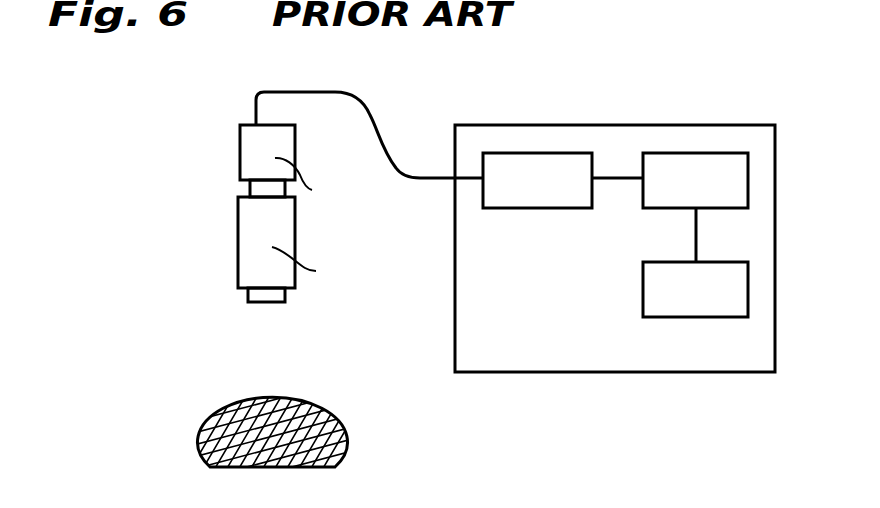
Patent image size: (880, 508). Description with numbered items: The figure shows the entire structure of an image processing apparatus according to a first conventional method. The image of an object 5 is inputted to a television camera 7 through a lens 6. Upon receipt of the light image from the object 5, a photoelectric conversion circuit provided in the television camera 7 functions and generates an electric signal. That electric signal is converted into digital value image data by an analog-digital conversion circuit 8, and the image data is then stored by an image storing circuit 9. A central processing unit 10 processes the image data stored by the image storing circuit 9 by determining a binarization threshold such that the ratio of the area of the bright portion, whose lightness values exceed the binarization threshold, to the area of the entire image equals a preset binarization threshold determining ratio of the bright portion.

The object 5 is at (317, 407).
The lens 6 is at (240, 247).
The television camera 7 is at (240, 156).
The analog-digital conversion circuit 8 is at (512, 208).
The image storing circuit 9 is at (653, 208).
The central processing unit 10 is at (655, 307).